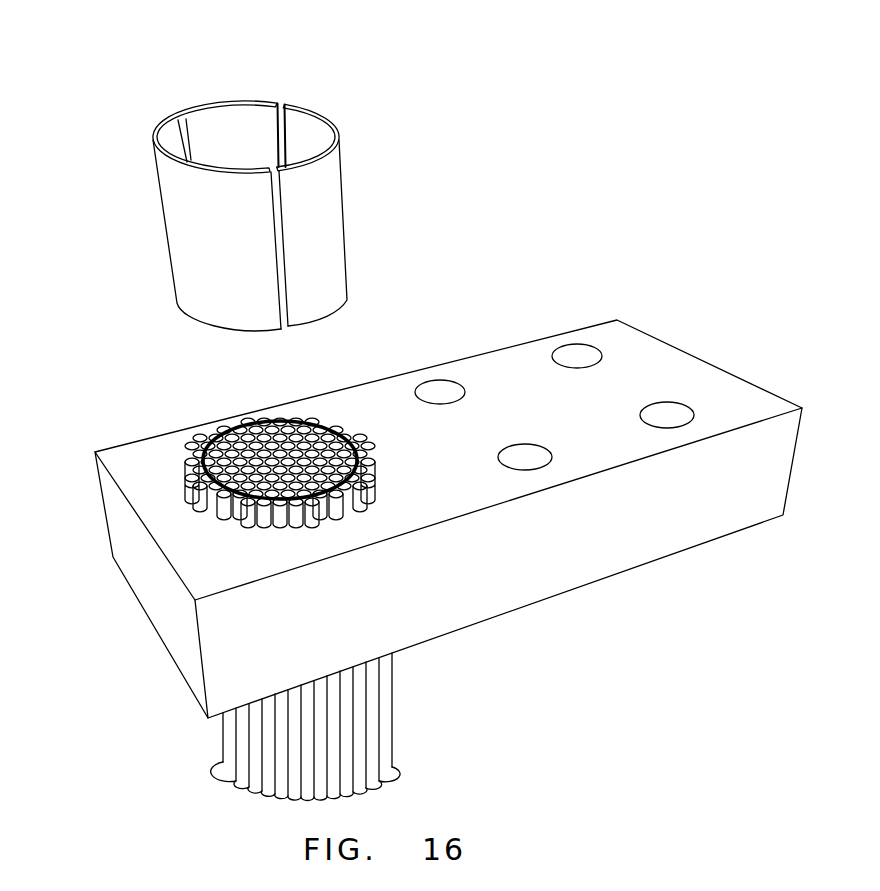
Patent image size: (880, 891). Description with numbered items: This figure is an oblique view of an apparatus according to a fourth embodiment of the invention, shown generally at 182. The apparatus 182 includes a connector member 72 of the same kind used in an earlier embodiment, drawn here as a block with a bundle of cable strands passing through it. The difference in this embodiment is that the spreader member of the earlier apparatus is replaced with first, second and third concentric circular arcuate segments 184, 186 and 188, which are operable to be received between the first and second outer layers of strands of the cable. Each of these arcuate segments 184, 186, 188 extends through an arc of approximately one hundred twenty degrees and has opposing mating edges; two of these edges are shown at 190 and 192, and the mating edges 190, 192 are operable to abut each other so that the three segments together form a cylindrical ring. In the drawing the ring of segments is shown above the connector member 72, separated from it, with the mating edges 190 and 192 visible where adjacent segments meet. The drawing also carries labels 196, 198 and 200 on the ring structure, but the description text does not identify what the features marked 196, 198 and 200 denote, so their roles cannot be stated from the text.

The connector member 72 is at (500, 362).
The apparatus 182 is at (289, 196).
The first concentric circular arcuate segment 184 is at (326, 208).
The second concentric circular arcuate segment 186 is at (243, 127).
The third concentric circular arcuate segment 188 is at (190, 208).
The mating edge 190 is at (290, 322).
The mating edge 192 is at (282, 312).
The top rim 196 is at (337, 114).
The rear slit 198 is at (215, 105).
The rim tab 200 is at (163, 129).